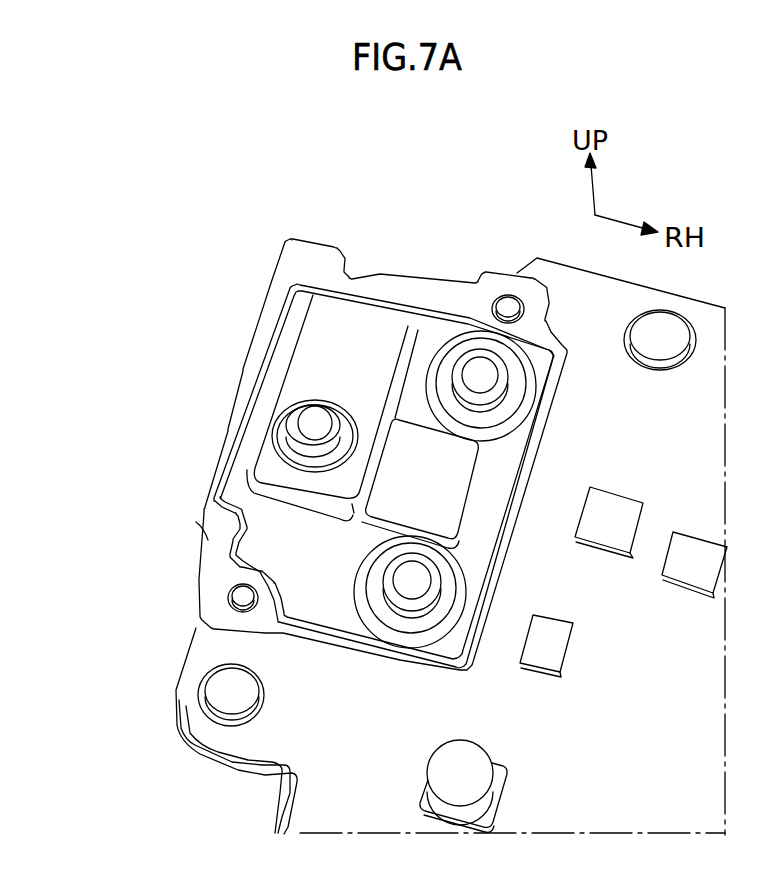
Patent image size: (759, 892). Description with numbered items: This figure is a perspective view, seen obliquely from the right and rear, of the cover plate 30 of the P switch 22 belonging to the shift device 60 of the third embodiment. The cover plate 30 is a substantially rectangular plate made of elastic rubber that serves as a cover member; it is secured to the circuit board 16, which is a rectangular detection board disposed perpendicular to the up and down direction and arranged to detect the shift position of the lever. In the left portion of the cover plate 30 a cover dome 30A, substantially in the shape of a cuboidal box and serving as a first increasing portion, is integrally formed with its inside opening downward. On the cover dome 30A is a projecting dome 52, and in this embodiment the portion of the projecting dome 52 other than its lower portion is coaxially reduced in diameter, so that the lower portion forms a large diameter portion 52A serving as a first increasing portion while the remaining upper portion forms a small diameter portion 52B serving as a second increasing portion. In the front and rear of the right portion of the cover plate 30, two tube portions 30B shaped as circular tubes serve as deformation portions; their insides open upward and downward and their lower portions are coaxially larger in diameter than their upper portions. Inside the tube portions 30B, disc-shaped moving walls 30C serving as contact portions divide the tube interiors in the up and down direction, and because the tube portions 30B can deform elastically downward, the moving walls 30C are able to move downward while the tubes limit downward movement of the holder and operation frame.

The circuit board 16 is at (572, 262).
The cover plate 30 is at (323, 454).
The P switch 22 is at (202, 577).
The cover dome 30A is at (290, 330).
The tube portions 30B is at (510, 363).
The moving walls 30C is at (480, 383).
The projecting dome 52 is at (276, 408).
The large diameter portion 52A is at (278, 466).
The small diameter portion 52B is at (277, 412).
The shift device 60 is at (344, 224).